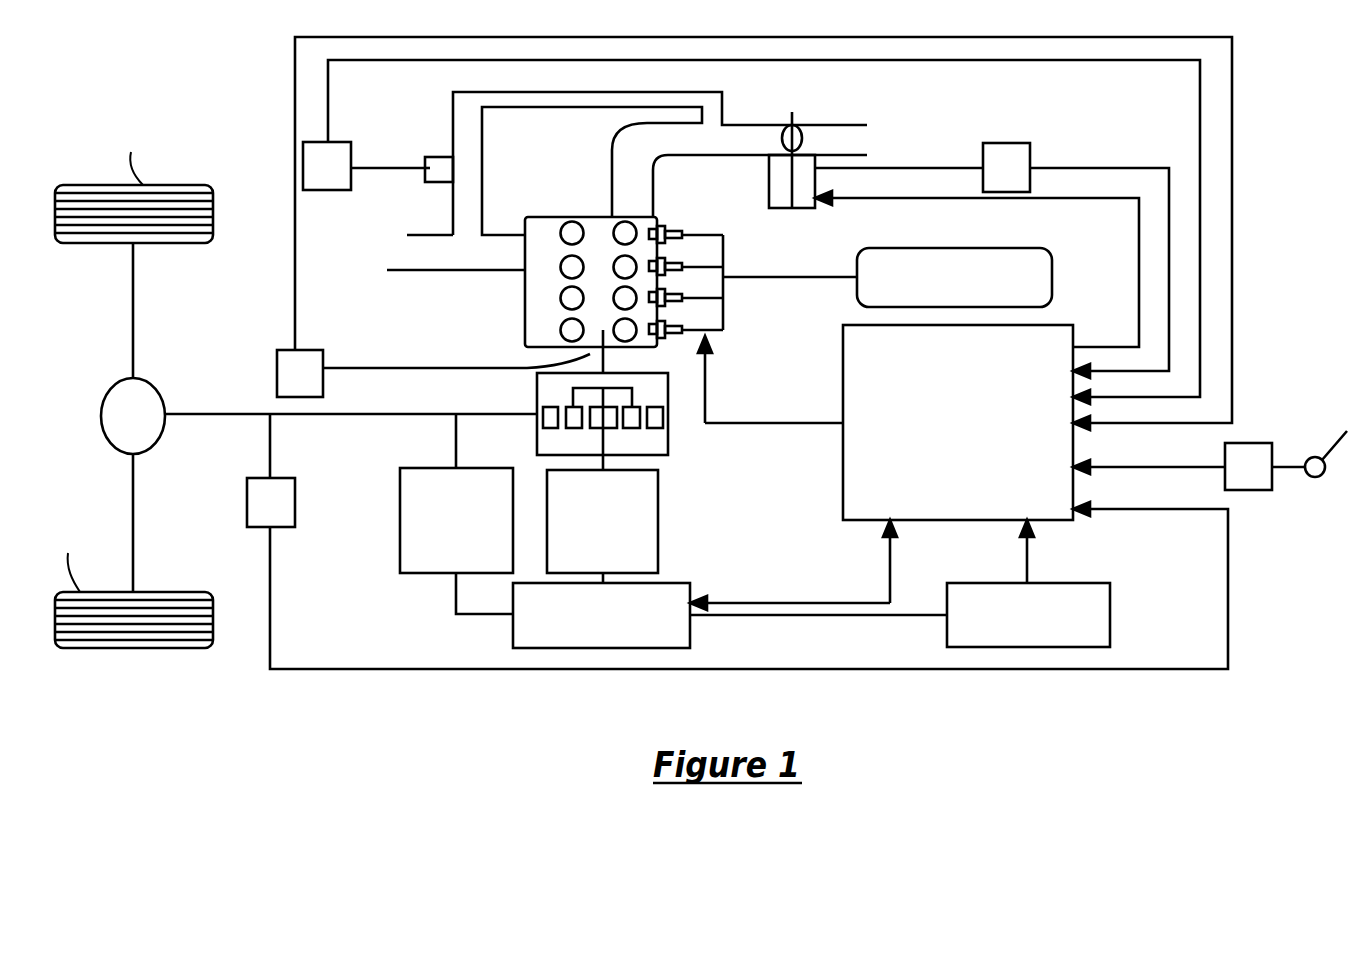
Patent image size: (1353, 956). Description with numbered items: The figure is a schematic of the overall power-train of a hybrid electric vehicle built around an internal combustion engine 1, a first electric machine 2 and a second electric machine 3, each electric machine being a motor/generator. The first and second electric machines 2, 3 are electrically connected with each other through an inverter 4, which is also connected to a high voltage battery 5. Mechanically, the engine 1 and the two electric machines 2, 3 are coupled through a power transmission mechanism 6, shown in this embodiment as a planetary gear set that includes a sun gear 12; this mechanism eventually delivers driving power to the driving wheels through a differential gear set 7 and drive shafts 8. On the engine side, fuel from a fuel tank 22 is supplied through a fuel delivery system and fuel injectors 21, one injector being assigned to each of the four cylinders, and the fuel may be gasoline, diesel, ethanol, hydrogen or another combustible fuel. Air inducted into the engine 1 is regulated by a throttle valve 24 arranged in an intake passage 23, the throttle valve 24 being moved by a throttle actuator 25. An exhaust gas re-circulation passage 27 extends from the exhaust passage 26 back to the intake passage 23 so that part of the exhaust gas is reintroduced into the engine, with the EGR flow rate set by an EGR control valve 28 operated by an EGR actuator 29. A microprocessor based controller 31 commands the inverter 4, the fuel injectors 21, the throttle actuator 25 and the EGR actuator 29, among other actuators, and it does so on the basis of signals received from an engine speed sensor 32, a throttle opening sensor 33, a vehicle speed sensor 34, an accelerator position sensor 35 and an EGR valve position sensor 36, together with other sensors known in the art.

The internal combustion engine 1 is at (563, 217).
The first electric machine 2 is at (658, 505).
The second electric machine 3 is at (400, 505).
The inverter 4 is at (687, 583).
The high voltage battery 5 is at (1112, 613).
The power transmission mechanism 6 is at (668, 446).
The differential gear set 7 is at (100, 412).
The drive shafts 8 is at (133, 300).
The sun gear 12 is at (537, 370).
The fuel injectors 21 is at (683, 230).
The fuel tank 22 is at (942, 247).
The intake passage 23 is at (625, 182).
The throttle valve 24 is at (800, 146).
The throttle actuator 25 is at (767, 168).
The exhaust passage 26 is at (410, 235).
The exhaust gas re-circulation passage 27 is at (543, 92).
The EGR control valve 28 is at (477, 180).
The EGR actuator 29 is at (430, 160).
The controller 31 is at (1040, 520).
The engine speed sensor 32 is at (289, 384).
The throttle opening sensor 33 is at (995, 178).
The vehicle speed sensor 34 is at (260, 513).
The accelerator position sensor 35 is at (1237, 477).
The EGR valve position sensor 36 is at (316, 177).